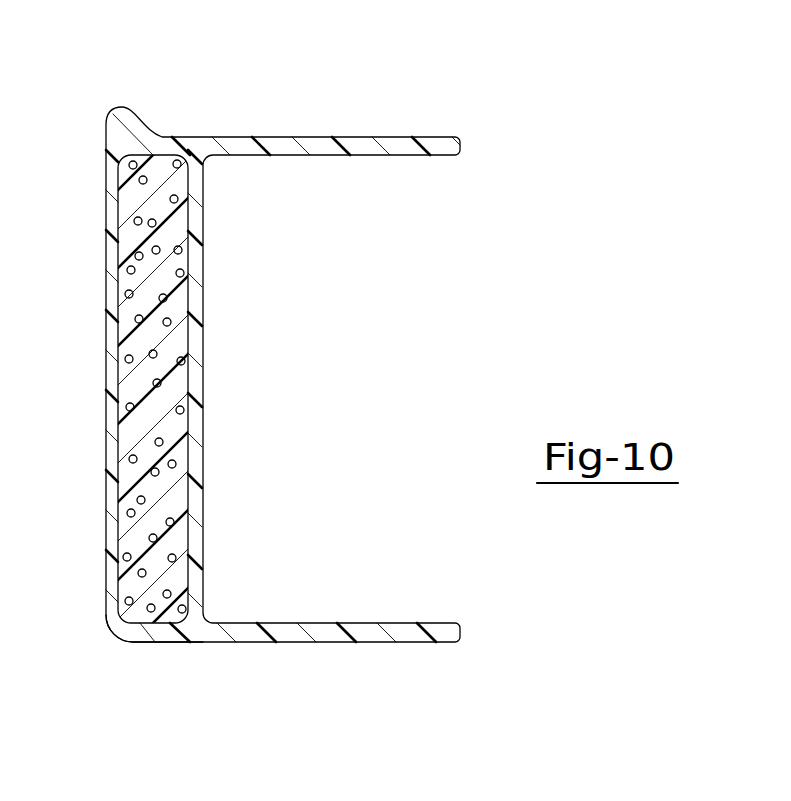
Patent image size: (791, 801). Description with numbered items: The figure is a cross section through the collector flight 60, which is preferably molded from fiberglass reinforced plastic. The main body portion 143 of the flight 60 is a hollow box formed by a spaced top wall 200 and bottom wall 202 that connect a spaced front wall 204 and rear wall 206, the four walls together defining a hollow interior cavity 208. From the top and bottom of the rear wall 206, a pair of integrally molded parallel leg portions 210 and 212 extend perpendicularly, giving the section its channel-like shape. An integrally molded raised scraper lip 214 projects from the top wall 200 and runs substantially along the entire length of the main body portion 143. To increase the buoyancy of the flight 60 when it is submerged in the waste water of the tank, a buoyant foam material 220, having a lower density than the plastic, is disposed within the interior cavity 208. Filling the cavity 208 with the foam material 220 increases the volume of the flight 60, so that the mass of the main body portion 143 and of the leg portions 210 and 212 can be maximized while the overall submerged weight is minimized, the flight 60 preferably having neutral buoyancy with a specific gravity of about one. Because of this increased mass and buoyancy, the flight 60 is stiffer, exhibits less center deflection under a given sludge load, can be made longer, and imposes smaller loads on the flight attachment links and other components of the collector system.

The flight 60 is at (320, 112).
The main body portion 143 is at (80, 631).
The top wall 200 is at (162, 142).
The bottom wall 202 is at (165, 627).
The front wall 204 is at (107, 337).
The rear wall 206 is at (197, 305).
The interior cavity 208 is at (175, 436).
The leg portion 210 is at (397, 148).
The leg portion 212 is at (317, 630).
The raised scraper lip 214 is at (113, 124).
The buoyant foam material 220 is at (172, 233).